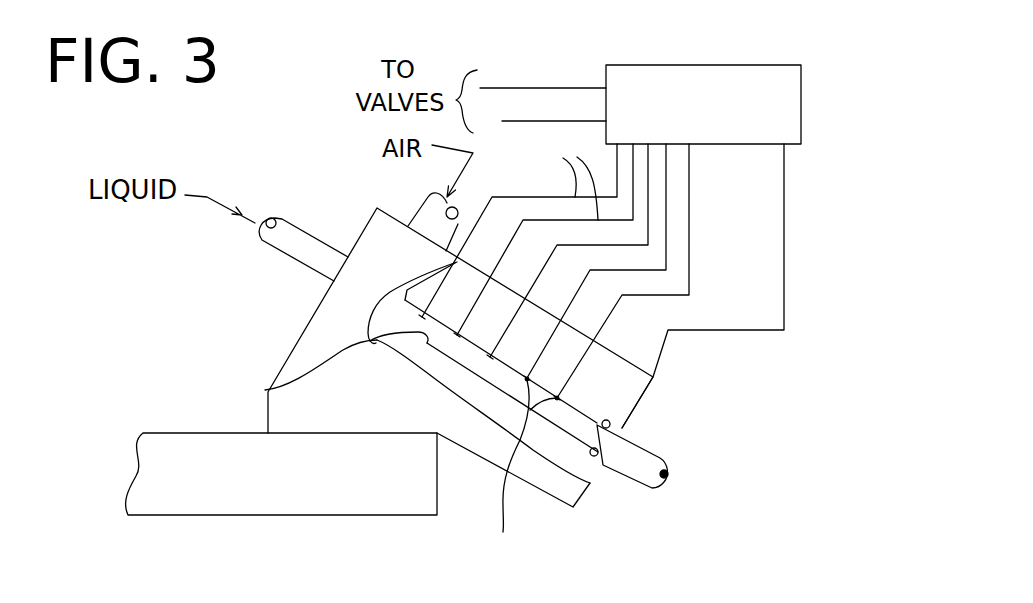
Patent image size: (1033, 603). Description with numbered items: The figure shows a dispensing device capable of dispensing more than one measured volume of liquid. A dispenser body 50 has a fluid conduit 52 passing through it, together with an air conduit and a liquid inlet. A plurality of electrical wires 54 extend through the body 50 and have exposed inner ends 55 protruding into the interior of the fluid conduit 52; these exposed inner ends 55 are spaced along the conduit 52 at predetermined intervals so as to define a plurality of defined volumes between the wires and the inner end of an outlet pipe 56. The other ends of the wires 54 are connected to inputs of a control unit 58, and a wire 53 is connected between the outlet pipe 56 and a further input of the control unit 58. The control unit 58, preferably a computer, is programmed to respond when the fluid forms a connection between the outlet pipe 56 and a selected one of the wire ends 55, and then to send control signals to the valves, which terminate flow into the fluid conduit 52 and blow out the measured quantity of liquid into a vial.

The dispenser body 50 is at (307, 323).
The fluid conduit 52 is at (265, 390).
The wire 53 is at (784, 218).
The electrical wires 54 is at (566, 154).
The exposed inner ends 55 is at (532, 473).
The outlet pipe 56 is at (660, 447).
The control unit 58 is at (698, 65).